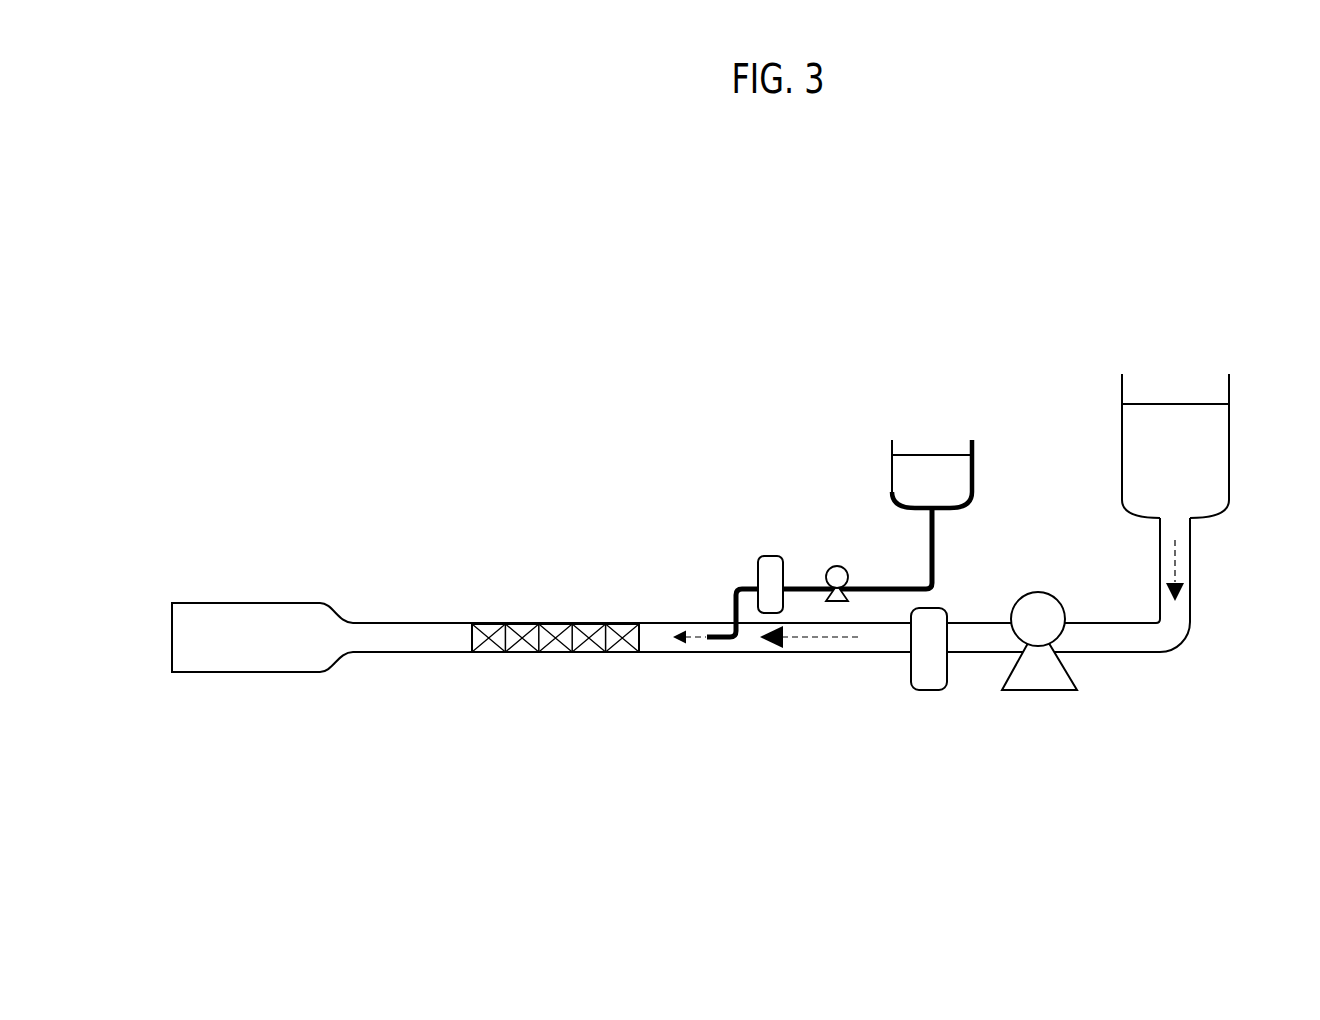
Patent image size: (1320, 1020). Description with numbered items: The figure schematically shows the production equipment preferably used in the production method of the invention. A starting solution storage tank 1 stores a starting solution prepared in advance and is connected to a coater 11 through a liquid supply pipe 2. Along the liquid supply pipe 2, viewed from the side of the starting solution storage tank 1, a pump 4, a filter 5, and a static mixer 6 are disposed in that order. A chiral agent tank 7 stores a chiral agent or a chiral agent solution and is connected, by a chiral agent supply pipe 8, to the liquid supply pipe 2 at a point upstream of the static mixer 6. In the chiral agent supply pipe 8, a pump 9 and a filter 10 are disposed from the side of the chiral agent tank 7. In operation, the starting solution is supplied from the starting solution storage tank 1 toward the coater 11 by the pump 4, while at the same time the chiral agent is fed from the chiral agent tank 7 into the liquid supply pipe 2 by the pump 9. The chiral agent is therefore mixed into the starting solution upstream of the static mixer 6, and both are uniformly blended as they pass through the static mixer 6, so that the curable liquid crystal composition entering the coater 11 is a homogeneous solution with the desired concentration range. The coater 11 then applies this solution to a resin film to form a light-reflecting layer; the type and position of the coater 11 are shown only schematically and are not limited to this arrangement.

The starting solution storage tank 1 is at (1122, 390).
The liquid supply pipe 2 is at (422, 622).
The pump 4 is at (1028, 693).
The filter 5 is at (929, 693).
The static mixer 6 is at (524, 620).
The chiral agent tank 7 is at (887, 445).
The chiral agent supply pipe 8 is at (733, 603).
The pump 9 is at (840, 564).
The filter 10 is at (770, 555).
The coater 11 is at (197, 602).